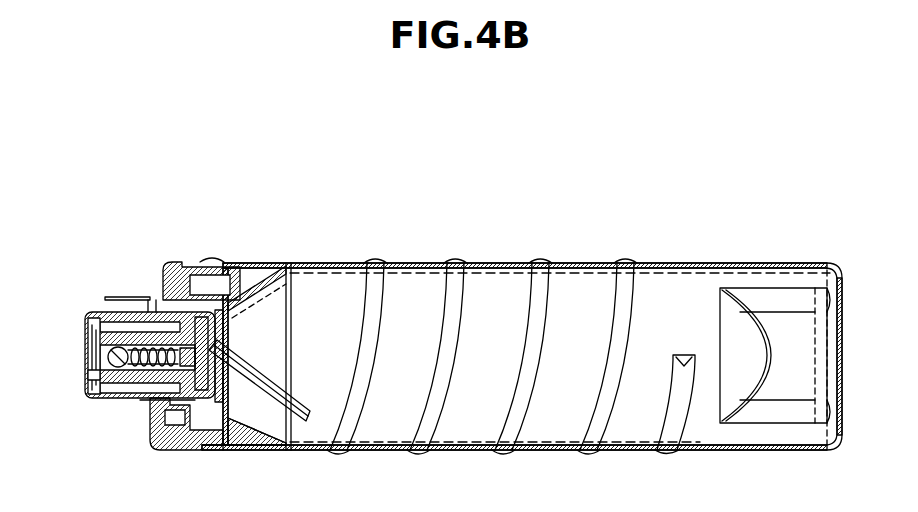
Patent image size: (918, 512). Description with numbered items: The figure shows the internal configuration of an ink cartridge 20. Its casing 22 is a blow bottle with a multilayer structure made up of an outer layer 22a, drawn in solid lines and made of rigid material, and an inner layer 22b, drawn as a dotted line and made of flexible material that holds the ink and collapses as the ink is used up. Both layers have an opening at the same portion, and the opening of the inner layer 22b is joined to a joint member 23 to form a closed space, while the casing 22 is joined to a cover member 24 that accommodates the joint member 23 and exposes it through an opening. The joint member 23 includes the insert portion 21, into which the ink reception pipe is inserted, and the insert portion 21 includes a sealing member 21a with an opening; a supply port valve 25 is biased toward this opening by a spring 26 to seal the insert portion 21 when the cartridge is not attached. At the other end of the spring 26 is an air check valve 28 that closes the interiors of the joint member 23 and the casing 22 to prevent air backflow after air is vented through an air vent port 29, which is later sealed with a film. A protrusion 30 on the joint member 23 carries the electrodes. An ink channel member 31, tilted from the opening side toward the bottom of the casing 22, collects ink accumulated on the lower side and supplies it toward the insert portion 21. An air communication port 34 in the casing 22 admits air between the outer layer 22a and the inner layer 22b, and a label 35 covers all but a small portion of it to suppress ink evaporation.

The ink cartridge 20 is at (858, 158).
The insert portion 21 is at (78, 352).
The sealing member 21a is at (86, 374).
The casing 22 is at (733, 206).
The outer layer 22a is at (645, 263).
The inner layer 22b is at (700, 272).
The joint member 23 is at (112, 400).
The cover member 24 is at (175, 265).
The supply port valve 25 is at (121, 345).
The spring 26 is at (150, 372).
The air check valve 28 is at (207, 316).
The air vent port 29 is at (158, 402).
The protrusion 30 is at (143, 298).
The ink channel member 31 is at (270, 383).
The air communication port 34 is at (830, 352).
The label 35 is at (828, 300).